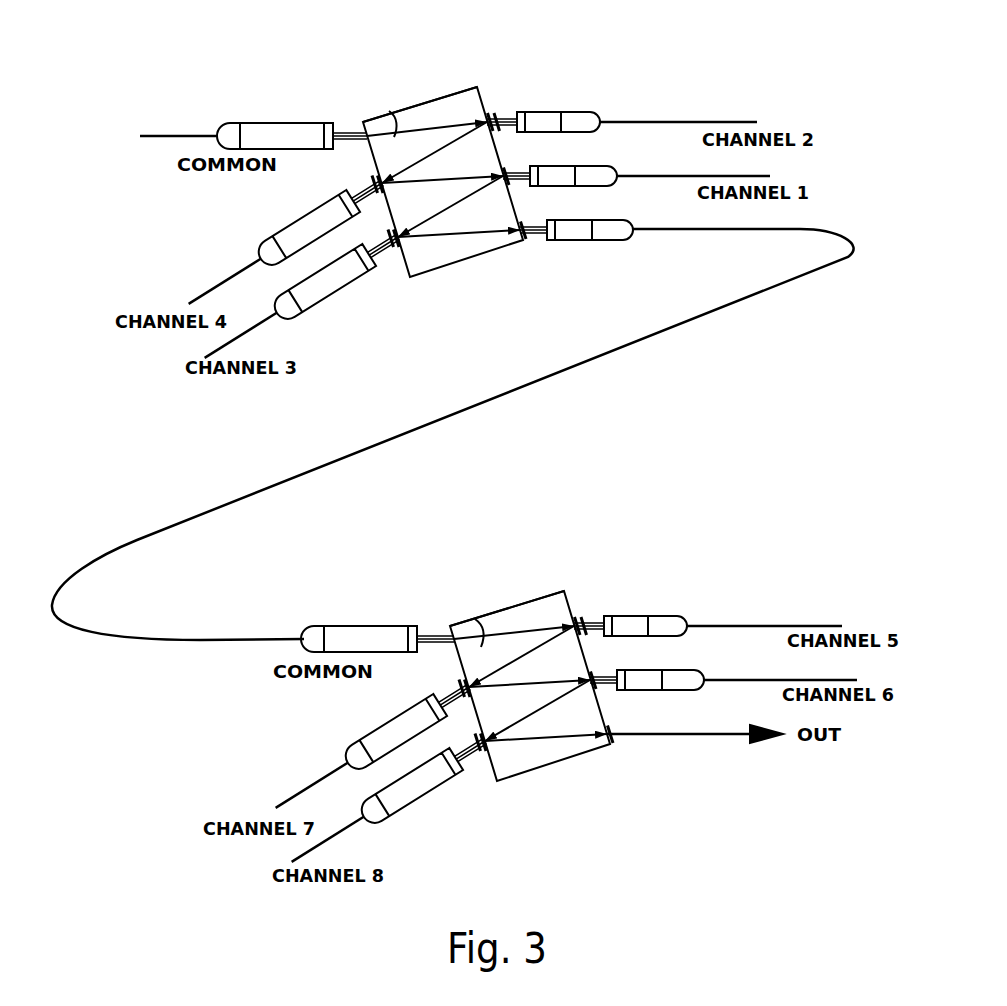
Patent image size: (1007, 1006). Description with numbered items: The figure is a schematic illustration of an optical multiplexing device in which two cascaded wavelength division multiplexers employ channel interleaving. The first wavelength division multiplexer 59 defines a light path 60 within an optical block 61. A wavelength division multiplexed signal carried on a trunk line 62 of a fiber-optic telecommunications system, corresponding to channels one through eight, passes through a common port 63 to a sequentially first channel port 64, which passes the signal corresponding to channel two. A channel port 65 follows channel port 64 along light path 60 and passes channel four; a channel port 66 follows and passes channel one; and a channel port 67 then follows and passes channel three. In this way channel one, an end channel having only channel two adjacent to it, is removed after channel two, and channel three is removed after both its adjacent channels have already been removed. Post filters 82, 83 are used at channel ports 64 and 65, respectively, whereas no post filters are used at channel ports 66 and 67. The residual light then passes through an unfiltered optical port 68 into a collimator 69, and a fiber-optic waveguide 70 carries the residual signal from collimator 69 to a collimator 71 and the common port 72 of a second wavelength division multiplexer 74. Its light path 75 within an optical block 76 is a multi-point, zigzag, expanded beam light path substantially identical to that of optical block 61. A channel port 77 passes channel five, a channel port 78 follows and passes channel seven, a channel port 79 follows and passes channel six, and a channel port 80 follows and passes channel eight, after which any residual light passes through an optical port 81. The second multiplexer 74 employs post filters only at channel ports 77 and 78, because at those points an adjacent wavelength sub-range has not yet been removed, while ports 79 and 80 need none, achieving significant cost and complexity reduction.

The wavelength division multiplexer 59 is at (432, 86).
The light path 60 is at (389, 111).
The optical block 61 is at (455, 92).
The trunk line 62 is at (168, 142).
The common port 63 is at (362, 140).
The channel port 64 is at (474, 122).
The channel port 65 is at (388, 180).
The channel port 66 is at (498, 175).
The channel port 67 is at (399, 234).
The unfiltered optical port 68 is at (513, 229).
The collimator 69 is at (592, 240).
The fiber-optic waveguide 70 is at (530, 390).
The collimator 71 is at (359, 614).
The common port 72 is at (422, 660).
The second wavelength division multiplexer 74 is at (507, 575).
The light path 75 is at (452, 612).
The optical block 76 is at (525, 665).
The channel port 77 is at (529, 625).
The channel port 78 is at (516, 661).
The channel port 79 is at (543, 674).
The channel port 80 is at (532, 715).
The optical port 81 is at (634, 727).
The post filter 82 is at (496, 112).
The post filter 83 is at (372, 185).